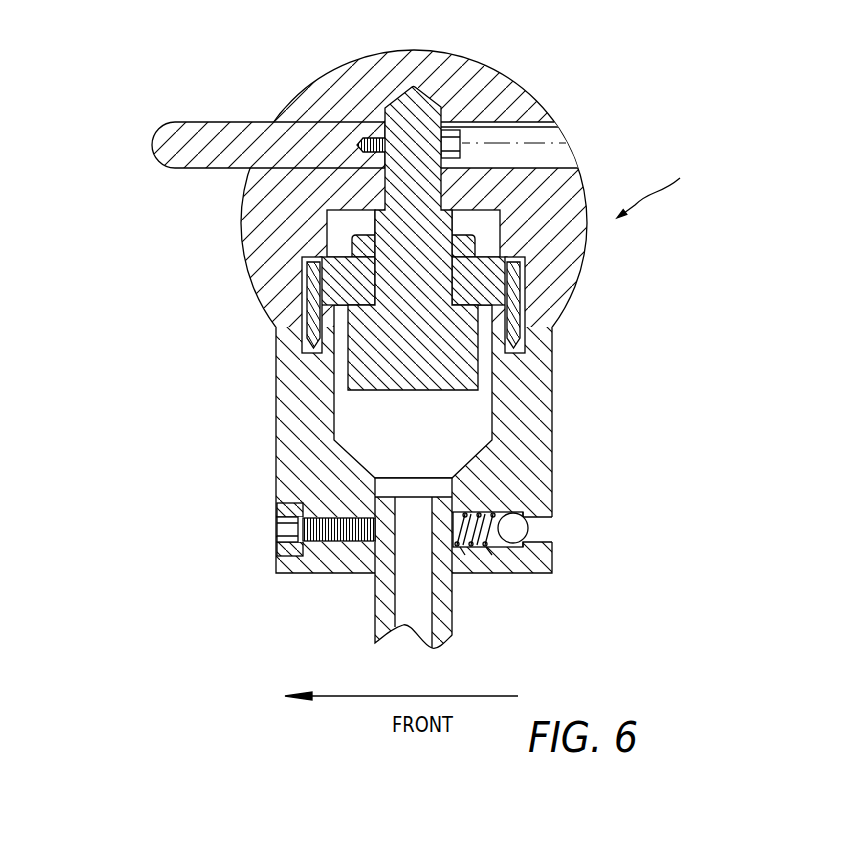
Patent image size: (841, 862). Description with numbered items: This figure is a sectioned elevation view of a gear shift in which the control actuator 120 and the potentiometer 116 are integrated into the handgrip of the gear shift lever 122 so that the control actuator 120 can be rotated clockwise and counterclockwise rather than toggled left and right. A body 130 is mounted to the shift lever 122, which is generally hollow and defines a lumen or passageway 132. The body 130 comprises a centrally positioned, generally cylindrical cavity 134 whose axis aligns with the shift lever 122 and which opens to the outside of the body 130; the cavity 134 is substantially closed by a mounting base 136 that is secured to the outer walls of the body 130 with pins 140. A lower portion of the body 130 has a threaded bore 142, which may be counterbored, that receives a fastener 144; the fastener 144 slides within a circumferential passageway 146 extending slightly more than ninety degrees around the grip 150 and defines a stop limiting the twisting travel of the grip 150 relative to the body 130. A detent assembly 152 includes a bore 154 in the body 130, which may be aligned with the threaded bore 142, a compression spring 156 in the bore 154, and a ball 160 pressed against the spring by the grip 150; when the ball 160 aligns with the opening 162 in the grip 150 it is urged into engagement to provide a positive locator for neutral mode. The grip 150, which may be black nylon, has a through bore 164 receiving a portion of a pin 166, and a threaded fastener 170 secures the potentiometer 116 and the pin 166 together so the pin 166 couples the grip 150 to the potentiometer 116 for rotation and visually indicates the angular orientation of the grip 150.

The potentiometer 116 is at (360, 358).
The control actuator 120 is at (676, 192).
The gear shift lever 122 is at (407, 585).
The body 130 is at (325, 474).
The passageway 132 is at (407, 617).
The cavity 134 is at (478, 423).
The mounting base 136 is at (503, 247).
The pins 140 is at (308, 320).
The threaded bore 142 is at (308, 508).
The fastener 144 is at (277, 548).
The circumferential passageway 146 is at (277, 572).
The grip 150 is at (248, 220).
The detent assembly 152 is at (550, 530).
The bore 154 is at (465, 548).
The compression spring 156 is at (490, 548).
The ball 160 is at (550, 538).
The opening 162 is at (550, 523).
The through bore 164 is at (523, 118).
The pin 166 is at (148, 148).
The threaded fastener 170 is at (455, 130).